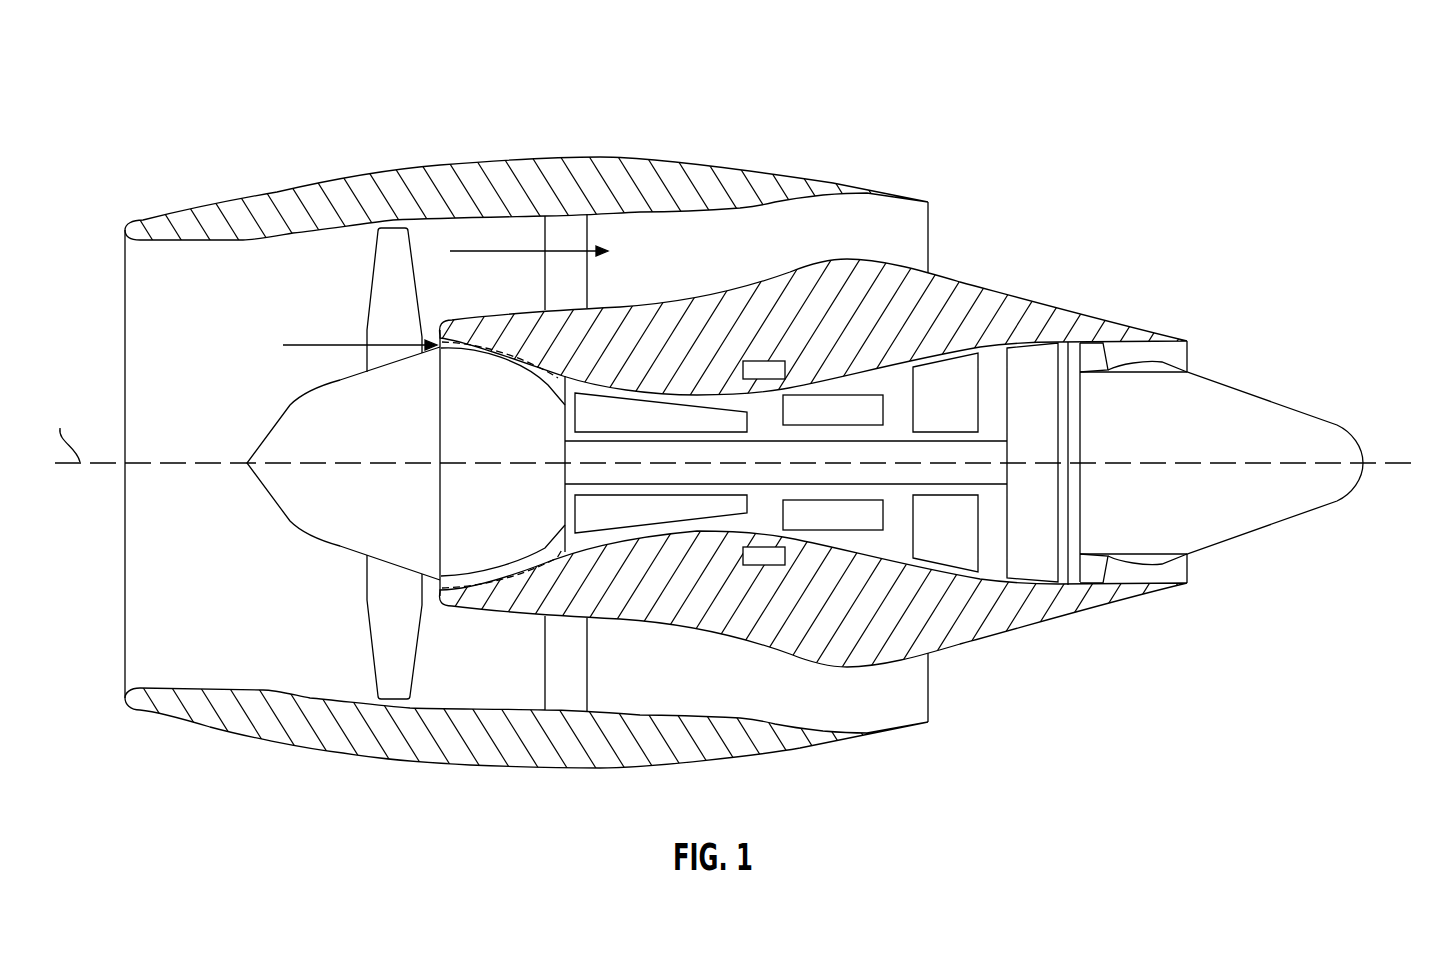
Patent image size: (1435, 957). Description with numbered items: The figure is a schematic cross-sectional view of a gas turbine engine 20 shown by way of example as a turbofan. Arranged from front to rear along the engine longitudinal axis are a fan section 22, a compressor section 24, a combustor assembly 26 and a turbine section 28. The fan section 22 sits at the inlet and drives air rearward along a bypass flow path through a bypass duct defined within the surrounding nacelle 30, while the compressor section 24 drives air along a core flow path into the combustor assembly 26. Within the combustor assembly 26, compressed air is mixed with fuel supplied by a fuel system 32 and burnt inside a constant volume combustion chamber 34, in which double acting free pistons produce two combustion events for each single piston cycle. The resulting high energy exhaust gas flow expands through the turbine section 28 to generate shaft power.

The gas turbine engine 20 is at (717, 427).
The fan section 22 is at (258, 139).
The compressor section 24 is at (563, 285).
The combustor assembly 26 is at (722, 256).
The turbine section 28 is at (913, 256).
The nacelle 30 is at (463, 180).
The fuel system 32 is at (760, 565).
The constant volume combustion chamber 34 is at (868, 405).